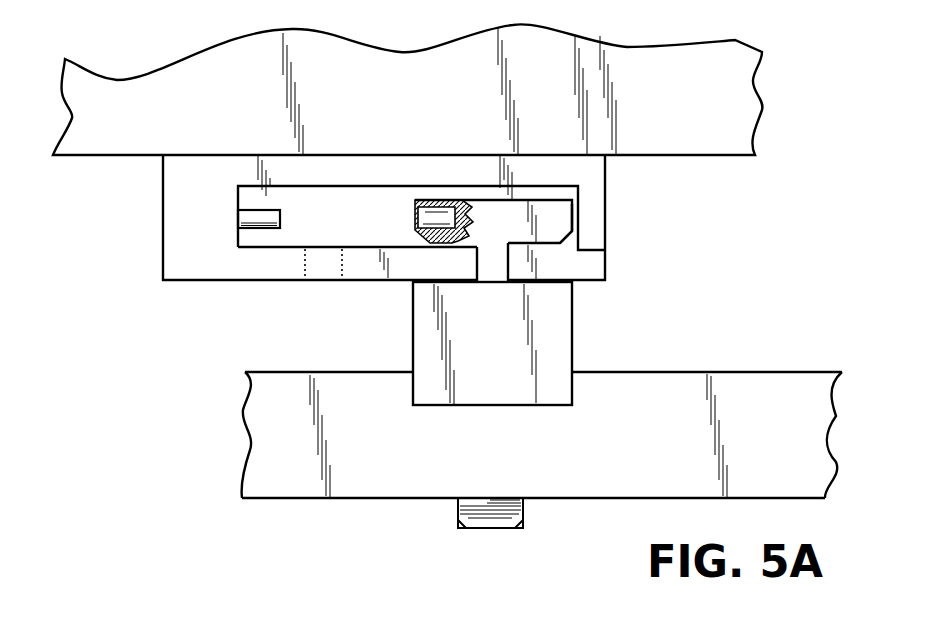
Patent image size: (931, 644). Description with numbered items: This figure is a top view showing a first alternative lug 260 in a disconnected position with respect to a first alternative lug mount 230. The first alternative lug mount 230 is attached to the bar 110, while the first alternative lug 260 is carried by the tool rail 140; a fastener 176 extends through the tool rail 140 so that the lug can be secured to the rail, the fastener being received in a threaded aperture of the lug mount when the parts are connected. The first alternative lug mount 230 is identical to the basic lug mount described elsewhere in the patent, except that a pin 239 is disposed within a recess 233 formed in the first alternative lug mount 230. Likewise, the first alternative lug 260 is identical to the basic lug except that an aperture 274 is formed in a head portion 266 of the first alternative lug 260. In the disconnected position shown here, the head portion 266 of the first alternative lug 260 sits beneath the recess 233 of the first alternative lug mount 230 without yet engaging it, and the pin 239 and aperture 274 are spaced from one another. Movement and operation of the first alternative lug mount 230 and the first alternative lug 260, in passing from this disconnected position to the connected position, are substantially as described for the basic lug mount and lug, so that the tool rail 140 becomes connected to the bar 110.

The bar 110 is at (697, 155).
The first alternative lug mount 230 is at (135, 231).
The recess 233 is at (302, 202).
The pin 239 is at (267, 220).
The aperture 274 is at (405, 222).
The head portion 266 is at (570, 212).
The first alternative lug 260 is at (588, 338).
The tool rail 140 is at (770, 372).
The fastener 176 is at (493, 530).